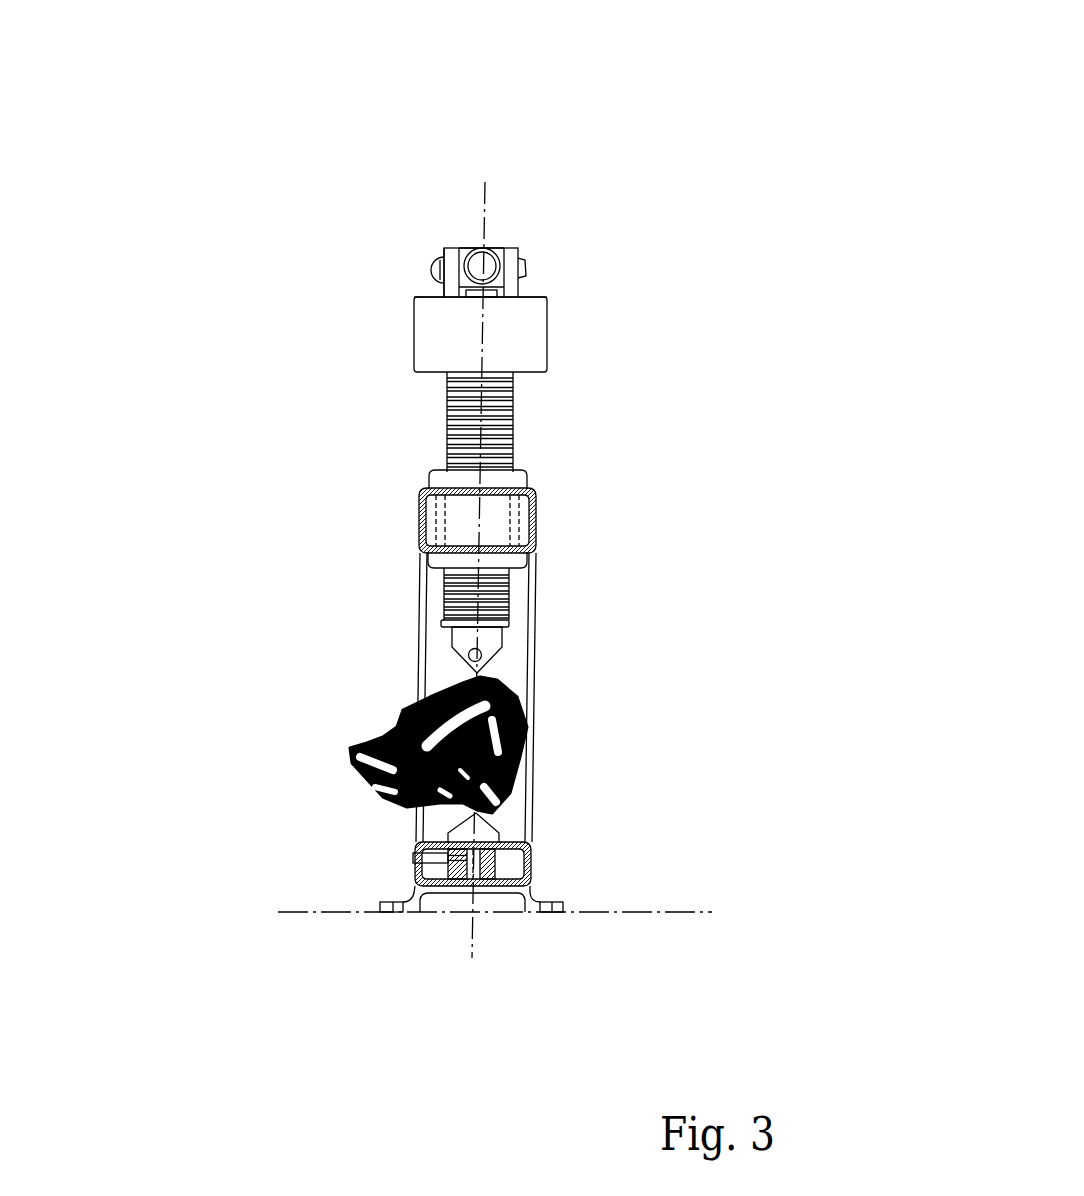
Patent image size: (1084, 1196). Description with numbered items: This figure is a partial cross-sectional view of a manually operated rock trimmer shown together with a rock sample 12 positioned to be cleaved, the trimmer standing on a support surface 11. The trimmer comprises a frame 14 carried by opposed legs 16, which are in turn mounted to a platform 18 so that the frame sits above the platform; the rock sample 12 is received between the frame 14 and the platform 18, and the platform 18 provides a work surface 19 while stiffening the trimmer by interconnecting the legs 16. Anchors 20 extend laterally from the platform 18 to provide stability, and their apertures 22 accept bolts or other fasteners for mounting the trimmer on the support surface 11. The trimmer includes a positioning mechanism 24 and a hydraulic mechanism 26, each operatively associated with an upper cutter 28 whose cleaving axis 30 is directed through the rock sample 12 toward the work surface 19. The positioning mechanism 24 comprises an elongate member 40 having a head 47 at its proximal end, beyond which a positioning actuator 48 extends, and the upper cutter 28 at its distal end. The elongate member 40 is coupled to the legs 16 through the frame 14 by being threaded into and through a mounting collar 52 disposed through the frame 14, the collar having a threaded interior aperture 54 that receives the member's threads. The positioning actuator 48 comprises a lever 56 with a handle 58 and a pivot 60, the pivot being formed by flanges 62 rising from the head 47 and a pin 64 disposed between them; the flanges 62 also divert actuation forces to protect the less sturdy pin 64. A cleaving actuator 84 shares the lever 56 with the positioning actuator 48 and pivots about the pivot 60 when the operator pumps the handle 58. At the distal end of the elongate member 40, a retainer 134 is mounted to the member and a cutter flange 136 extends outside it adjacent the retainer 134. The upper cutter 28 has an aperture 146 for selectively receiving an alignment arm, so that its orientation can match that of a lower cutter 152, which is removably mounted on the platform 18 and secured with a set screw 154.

The support surface 11 is at (690, 913).
The rock sample 12 is at (469, 683).
The frame 14 is at (567, 511).
The legs 16 is at (464, 700).
The platform 18 is at (453, 844).
The work surface 19 is at (405, 832).
The anchors 20 is at (483, 977).
The apertures 22 is at (548, 914).
The positioning mechanism 24 is at (586, 212).
The hydraulic mechanism 26 is at (618, 350).
The upper cutter 28 is at (484, 664).
The cleaving axis 30 is at (487, 195).
The elongate member 40 is at (445, 428).
The head 47 is at (390, 333).
The positioning actuator 48 is at (573, 223).
The mounting collar 52 is at (536, 540).
The threaded interior aperture 54 is at (430, 478).
The lever 56 is at (467, 245).
The handle 58 is at (500, 250).
The pivot 60 is at (408, 264).
The flanges 62 is at (445, 245).
The pin 64 is at (527, 268).
The cleaving actuator 84 is at (689, 212).
The retainer 134 is at (440, 619).
The cutter flange 136 is at (452, 637).
The aperture 146 is at (476, 672).
The lower cutter 152 is at (498, 822).
The set screw 154 is at (413, 855).